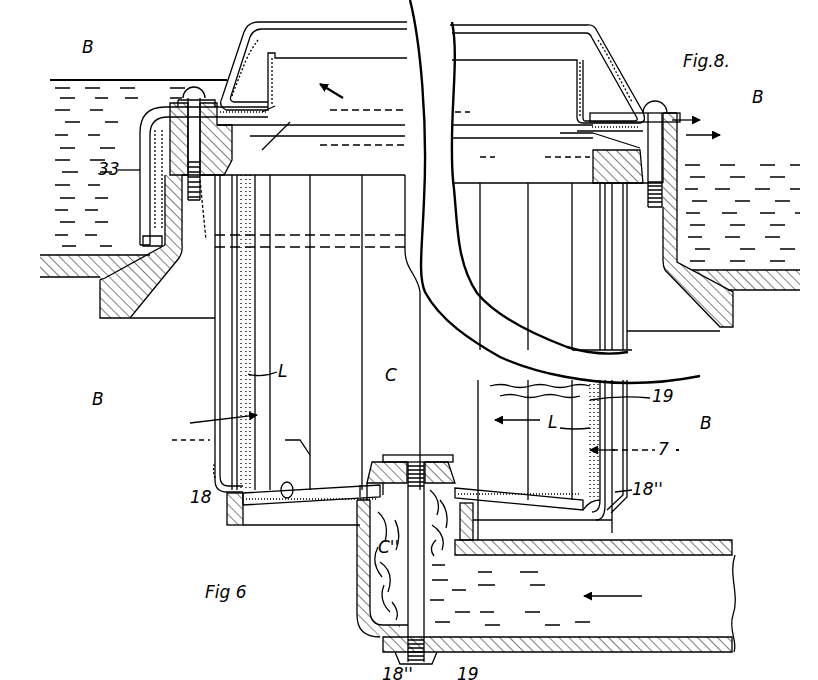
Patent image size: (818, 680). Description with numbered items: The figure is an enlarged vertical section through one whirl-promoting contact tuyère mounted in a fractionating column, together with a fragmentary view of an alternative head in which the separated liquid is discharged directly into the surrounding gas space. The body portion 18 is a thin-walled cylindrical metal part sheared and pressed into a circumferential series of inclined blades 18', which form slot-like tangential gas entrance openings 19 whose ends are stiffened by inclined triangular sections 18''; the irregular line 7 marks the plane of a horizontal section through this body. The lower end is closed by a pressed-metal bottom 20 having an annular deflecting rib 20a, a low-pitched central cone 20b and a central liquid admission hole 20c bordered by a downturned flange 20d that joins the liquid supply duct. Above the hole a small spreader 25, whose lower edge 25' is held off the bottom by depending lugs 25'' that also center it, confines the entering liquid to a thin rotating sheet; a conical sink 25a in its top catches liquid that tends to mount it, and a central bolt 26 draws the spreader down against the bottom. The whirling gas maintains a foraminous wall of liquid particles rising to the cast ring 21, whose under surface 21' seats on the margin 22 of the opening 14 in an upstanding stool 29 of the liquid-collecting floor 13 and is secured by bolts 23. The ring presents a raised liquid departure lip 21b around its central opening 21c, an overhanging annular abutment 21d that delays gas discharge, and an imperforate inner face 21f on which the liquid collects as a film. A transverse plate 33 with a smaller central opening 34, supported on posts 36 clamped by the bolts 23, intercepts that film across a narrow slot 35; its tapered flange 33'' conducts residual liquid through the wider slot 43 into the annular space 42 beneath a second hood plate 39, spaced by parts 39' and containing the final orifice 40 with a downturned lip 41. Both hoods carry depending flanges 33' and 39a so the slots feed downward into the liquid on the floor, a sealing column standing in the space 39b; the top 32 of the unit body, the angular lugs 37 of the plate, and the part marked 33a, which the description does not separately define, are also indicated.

In FIG. 6, the filter 7 is at (231, 435).
In FIG. 6, the compartment floor 13 is at (68, 278).
In FIG. 8, the compartment floor 13 is at (756, 280).
In FIG. 6, the floor opening 14 is at (205, 182).
In FIG. 8, the floor opening 14 is at (618, 178).
In FIG. 6, the body portion 18 is at (301, 332).
In FIG. 8, the body portion 18 is at (610, 241).
In FIG. 6, the blades 18' is at (212, 333).
In FIG. 8, the blades 18' is at (645, 266).
In FIG. 6, the inclined triangular sections 18'' is at (193, 475).
In FIG. 8, the inclined triangular sections 18'' is at (600, 225).
In FIG. 6, the tangential gas entrance openings 19 is at (218, 358).
In FIG. 6, the bottom 20 is at (326, 490).
In FIG. 6, the annular deflecting rib 20a is at (243, 522).
In FIG. 6, the low pitched cone 20b is at (288, 502).
In FIG. 6, the central liquid admission hole 20c is at (360, 548).
In FIG. 6, the downturned flange 20d is at (533, 509).
In FIG. 6, the top member 21 is at (293, 150).
In FIG. 8, the top member 21 is at (557, 171).
In FIG. 8, the under surface 21' is at (724, 164).
In FIG. 6, the liquid departure lip 21b is at (290, 127).
In FIG. 8, the liquid departure lip 21b is at (588, 143).
In FIG. 6, the central opening 21c is at (362, 157).
In FIG. 8, the central opening 21c is at (535, 160).
In FIG. 6, the annular abutment 21d is at (310, 211).
In FIG. 8, the annular abutment 21d is at (565, 208).
In FIG. 6, the inner face of abutment ring 21f is at (262, 156).
In FIG. 8, the inner face of abutment ring 21f is at (593, 158).
In FIG. 6, the margin of opening 22 is at (108, 318).
In FIG. 8, the margin of opening 22 is at (796, 154).
In FIG. 6, the bolts 23 is at (198, 88).
In FIG. 8, the bolts 23 is at (668, 130).
In FIG. 6, the spreader 25 is at (411, 461).
In FIG. 6, the conical sink 25a is at (440, 460).
In FIG. 6, the lower edge of spreader 25' is at (493, 455).
In FIG. 6, the depending lugs 25'' is at (454, 529).
In FIG. 6, the central bolt 26 is at (420, 594).
In FIG. 6, the stools 29 is at (177, 250).
In FIG. 8, the stools 29 is at (672, 235).
In FIG. 6, the top of unit body 32 is at (140, 188).
In FIG. 6, the separator plate 33 is at (223, 99).
In FIG. 8, the separator plate 33 is at (635, 110).
In FIG. 6, the downturned flange of plate 33' is at (121, 116).
In FIG. 6, the tapered flange and collecting surface 33'' is at (294, 81).
In FIG. 8, the tapered flange and collecting surface 33'' is at (559, 90).
In FIG. 6, the plate foot 33a is at (142, 224).
In FIG. 6, the central opening of plate 34 is at (338, 118).
In FIG. 6, the annular slot 35 is at (270, 110).
In FIG. 8, the annular slot 35 is at (594, 143).
In FIG. 6, the posts 36 is at (143, 106).
In FIG. 8, the posts 36 is at (680, 140).
In FIG. 8, the angular lugs 37 is at (492, 119).
In FIG. 8, the hood plate 39 is at (621, 53).
In FIG. 6, the spacing parts 39' is at (164, 143).
In FIG. 6, the downturned flange of hood 39a is at (152, 150).
In FIG. 6, the extension slot 39b is at (140, 206).
In FIG. 6, the final orifice 40 is at (372, 15).
In FIG. 8, the final orifice 40 is at (542, 30).
In FIG. 8, the downturned lip 41 is at (641, 35).
In FIG. 8, the annular liquid reception space 42 is at (583, 90).
In FIG. 6, the liquid discharge slot 43 is at (324, 26).
In FIG. 8, the liquid discharge slot 43 is at (599, 71).